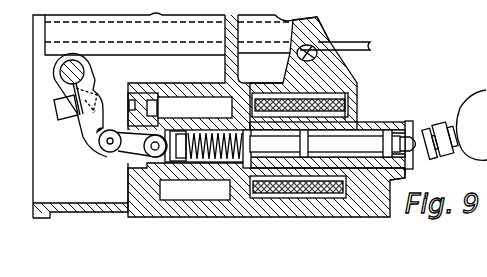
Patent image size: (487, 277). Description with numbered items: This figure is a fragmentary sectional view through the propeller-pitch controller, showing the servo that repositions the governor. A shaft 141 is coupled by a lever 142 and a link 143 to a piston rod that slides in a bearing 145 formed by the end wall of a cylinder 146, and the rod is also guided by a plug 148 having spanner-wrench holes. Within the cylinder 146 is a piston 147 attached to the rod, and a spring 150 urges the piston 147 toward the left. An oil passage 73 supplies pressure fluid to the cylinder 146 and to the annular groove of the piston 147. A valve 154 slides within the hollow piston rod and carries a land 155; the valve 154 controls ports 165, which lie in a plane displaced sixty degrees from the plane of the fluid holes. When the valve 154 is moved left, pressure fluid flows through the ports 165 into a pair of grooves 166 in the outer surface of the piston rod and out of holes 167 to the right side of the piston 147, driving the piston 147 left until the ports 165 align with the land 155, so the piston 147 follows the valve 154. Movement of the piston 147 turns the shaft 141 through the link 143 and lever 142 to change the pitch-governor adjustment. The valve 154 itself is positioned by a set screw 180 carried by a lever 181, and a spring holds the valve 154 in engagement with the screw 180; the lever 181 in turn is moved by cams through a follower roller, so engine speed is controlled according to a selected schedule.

The oil passage 73 is at (327, 50).
The shaft 141 is at (85, 70).
The lever 142 is at (82, 132).
The link 143 is at (122, 151).
The bearing 145 is at (418, 170).
The cylinder 146 is at (194, 90).
The piston 147 is at (338, 100).
The plug 148 is at (128, 108).
The spring 150 is at (345, 104).
The valve 154 is at (352, 145).
The land 155 is at (244, 150).
The ports 165 is at (231, 107).
The grooves 166 is at (270, 99).
The holes 167 is at (322, 83).
The set screw 180 is at (425, 130).
The lever 181 is at (471, 117).